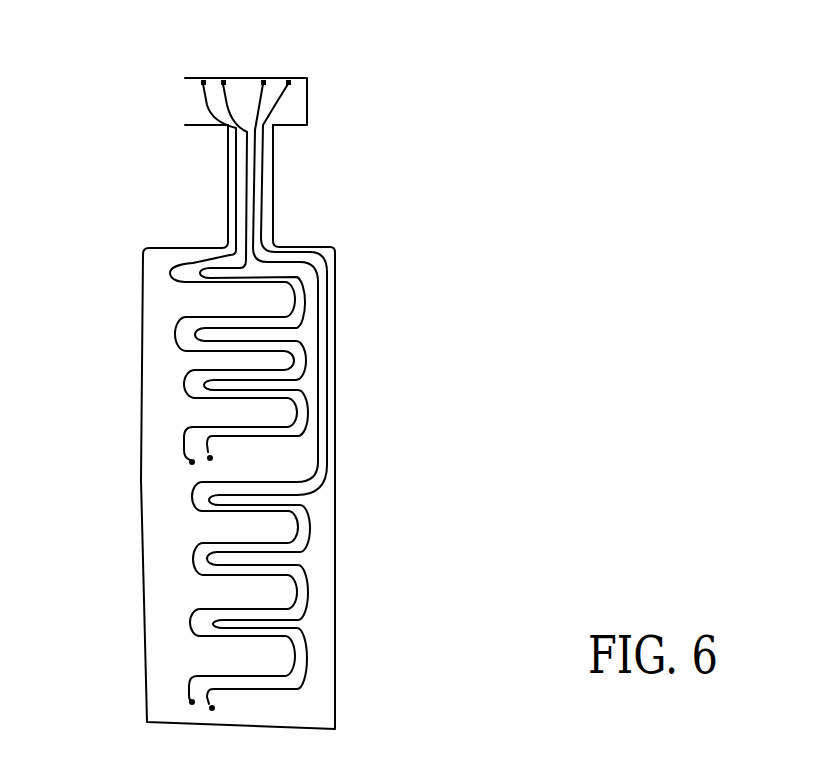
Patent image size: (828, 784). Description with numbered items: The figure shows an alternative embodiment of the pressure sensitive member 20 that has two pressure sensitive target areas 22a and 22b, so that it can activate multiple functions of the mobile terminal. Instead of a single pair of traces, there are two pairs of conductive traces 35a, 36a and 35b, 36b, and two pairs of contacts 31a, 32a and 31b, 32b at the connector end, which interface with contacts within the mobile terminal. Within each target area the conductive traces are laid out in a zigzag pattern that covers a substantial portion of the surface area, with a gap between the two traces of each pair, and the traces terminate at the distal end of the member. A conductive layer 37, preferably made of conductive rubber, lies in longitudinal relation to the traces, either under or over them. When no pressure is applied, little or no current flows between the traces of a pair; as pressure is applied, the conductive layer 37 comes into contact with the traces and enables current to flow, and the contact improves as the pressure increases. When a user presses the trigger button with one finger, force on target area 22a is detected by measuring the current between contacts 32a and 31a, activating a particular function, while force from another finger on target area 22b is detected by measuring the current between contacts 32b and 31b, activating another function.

The pressure sensitive member 20 is at (405, 283).
The target area 22a is at (161, 363).
The target area 22b is at (166, 596).
The contact 31a is at (228, 74).
The contact 31b is at (293, 75).
The contact 32a is at (203, 80).
The contact 32b is at (265, 77).
The conductive trace 35a is at (251, 364).
The conductive trace 35b is at (258, 603).
The conductive trace 36a is at (180, 287).
The conductive trace 36b is at (189, 511).
The conductive layer 37 is at (320, 505).